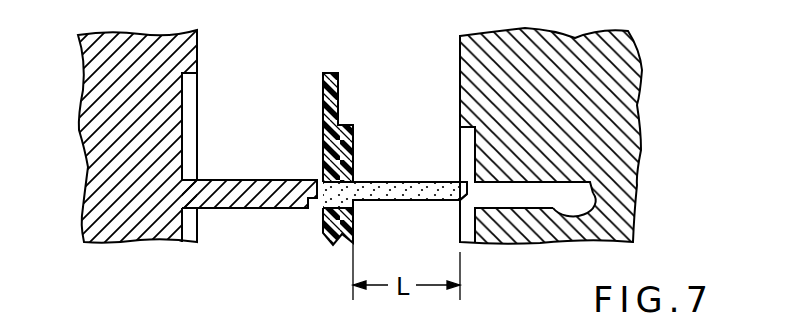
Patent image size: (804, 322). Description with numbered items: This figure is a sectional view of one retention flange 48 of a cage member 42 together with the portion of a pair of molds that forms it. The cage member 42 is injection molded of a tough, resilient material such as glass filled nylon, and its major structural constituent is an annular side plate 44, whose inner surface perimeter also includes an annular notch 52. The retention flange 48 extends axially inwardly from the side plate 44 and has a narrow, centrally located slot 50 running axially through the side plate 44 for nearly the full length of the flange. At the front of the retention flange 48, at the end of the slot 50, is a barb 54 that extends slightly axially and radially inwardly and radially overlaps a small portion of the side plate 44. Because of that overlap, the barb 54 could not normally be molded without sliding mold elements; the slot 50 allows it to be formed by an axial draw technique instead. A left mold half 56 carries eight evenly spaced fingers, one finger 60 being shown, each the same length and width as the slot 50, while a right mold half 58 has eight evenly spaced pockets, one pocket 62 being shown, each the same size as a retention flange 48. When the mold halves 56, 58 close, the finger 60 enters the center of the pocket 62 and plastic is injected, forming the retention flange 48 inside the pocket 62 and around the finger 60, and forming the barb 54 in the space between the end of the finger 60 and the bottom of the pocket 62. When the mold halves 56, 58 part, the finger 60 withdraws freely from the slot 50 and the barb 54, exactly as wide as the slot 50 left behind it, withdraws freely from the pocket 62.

The cage member 42 is at (322, 137).
The side plate 44 is at (325, 220).
The retention flange 48 is at (418, 201).
The slot 50 is at (388, 183).
The annular notch 52 is at (340, 95).
The barb 54 is at (451, 203).
The left mold half 56 is at (78, 130).
The right mold half 58 is at (637, 95).
The finger 60 is at (223, 188).
The pocket 62 is at (576, 194).